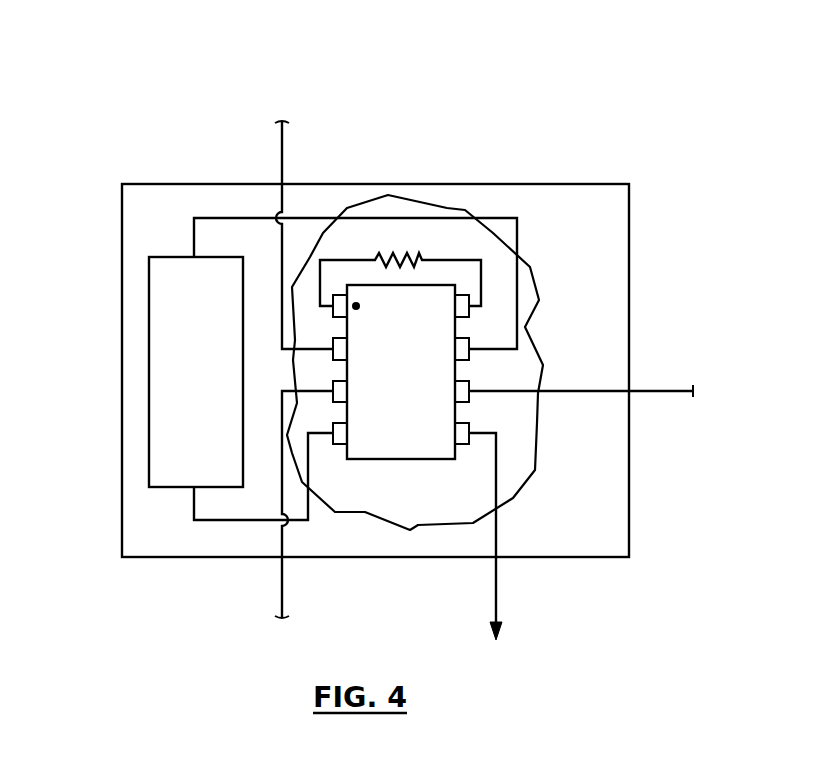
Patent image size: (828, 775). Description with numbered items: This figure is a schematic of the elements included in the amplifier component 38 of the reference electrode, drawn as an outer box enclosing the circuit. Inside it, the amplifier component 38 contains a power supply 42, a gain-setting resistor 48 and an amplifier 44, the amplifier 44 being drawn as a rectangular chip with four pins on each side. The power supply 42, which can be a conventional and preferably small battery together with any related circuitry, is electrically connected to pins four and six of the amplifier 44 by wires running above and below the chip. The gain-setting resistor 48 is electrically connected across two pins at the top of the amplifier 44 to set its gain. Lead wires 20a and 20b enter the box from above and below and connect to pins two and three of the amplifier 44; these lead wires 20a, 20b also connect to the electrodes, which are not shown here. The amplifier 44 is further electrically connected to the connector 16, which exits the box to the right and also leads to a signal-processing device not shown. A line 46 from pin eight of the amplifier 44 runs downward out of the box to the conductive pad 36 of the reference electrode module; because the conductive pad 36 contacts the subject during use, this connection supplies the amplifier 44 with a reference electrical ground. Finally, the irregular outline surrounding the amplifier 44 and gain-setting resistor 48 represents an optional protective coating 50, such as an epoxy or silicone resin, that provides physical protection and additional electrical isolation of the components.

The amplifier component 38 is at (512, 127).
The power supply 42 is at (160, 406).
The lead wire 20a is at (282, 150).
The lead wire 20b is at (280, 578).
The amplifier 44 is at (412, 379).
The gain-setting resistor 48 is at (400, 257).
The connector 16 is at (647, 390).
The line to pad 46 is at (497, 590).
The conductive pad 36 is at (508, 660).
The protective coating 50 is at (418, 525).